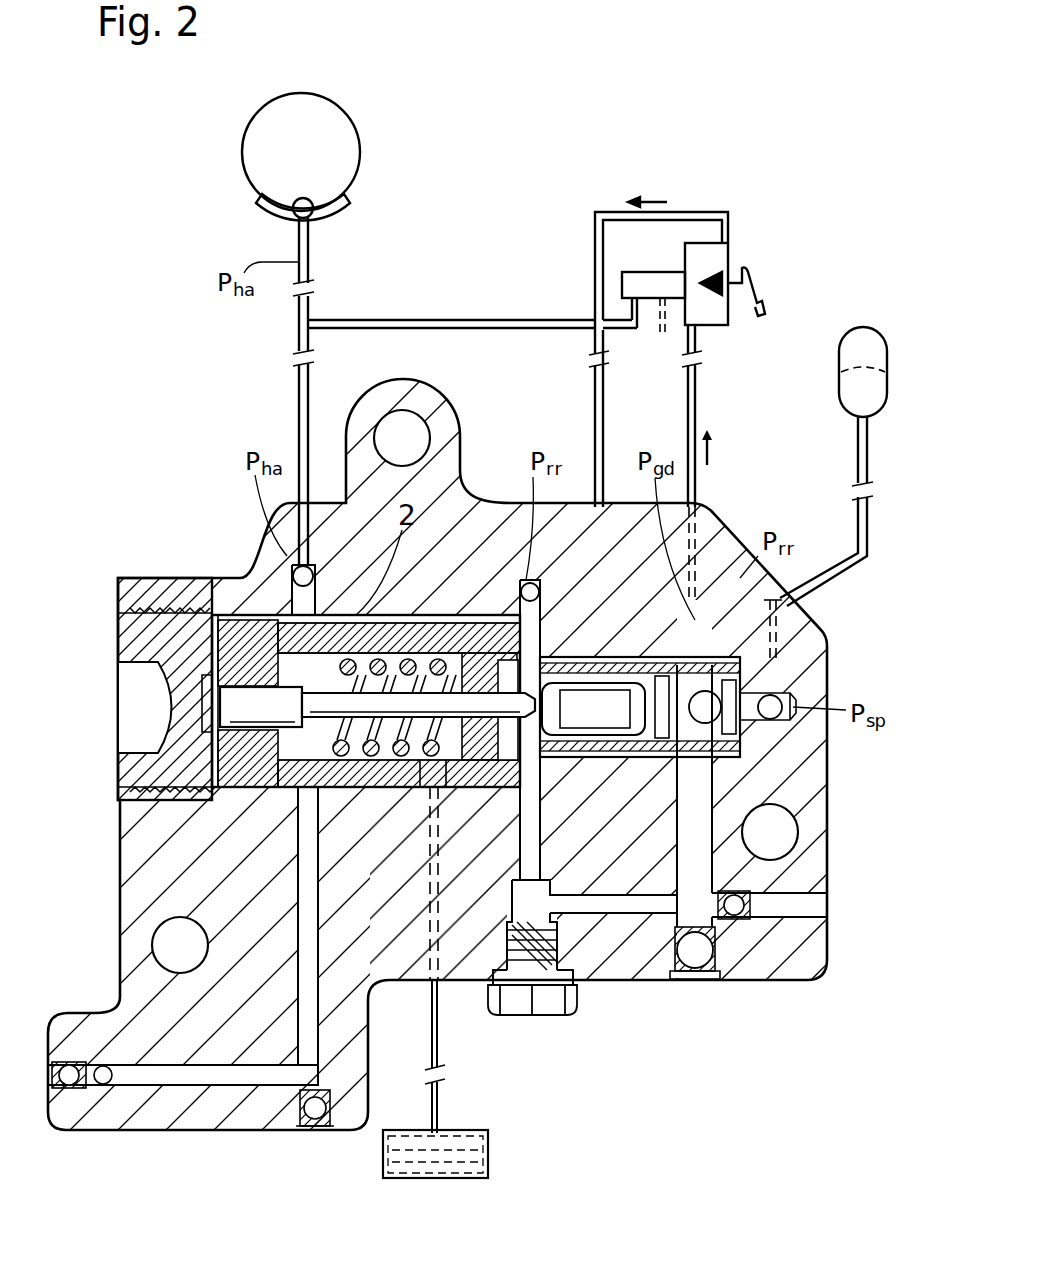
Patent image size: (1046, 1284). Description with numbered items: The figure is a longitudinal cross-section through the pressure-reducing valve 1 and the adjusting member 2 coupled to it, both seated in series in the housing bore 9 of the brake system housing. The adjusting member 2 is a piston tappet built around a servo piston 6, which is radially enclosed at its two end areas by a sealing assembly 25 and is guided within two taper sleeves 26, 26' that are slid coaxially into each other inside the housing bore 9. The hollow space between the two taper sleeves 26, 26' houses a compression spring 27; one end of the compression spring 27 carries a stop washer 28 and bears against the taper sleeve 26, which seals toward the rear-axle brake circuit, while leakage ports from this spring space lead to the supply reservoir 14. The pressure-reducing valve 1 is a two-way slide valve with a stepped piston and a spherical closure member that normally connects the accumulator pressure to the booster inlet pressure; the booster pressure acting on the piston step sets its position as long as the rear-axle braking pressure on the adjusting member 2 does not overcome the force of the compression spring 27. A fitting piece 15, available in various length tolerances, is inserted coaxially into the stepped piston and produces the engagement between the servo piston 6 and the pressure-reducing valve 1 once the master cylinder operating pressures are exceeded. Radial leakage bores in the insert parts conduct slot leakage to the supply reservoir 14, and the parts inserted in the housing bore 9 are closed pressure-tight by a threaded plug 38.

The pressure-reducing valve 1 is at (578, 760).
The adjusting member 2 is at (523, 773).
The servo piston 6 is at (430, 692).
The housing bore 9 is at (407, 795).
The supply reservoir 14 is at (478, 1163).
The fitting piece 15 is at (640, 665).
The sealing assembly 25 is at (505, 690).
The taper sleeve 26 is at (336, 639).
The taper sleeve 26' is at (238, 639).
The compression spring 27 is at (356, 618).
The stop washer 28 is at (328, 790).
The threaded plug 38 is at (172, 627).